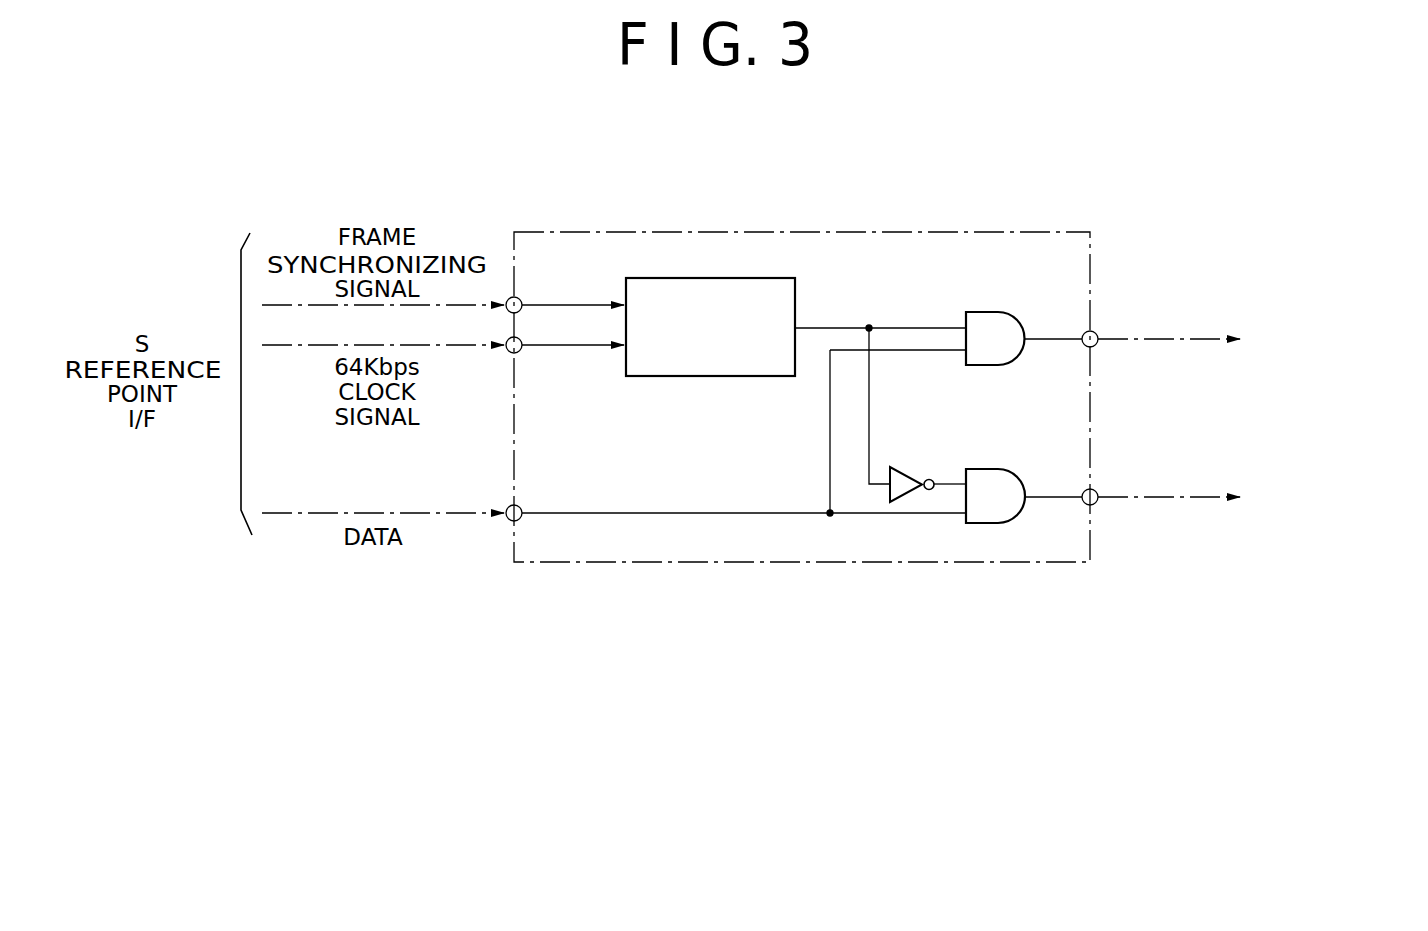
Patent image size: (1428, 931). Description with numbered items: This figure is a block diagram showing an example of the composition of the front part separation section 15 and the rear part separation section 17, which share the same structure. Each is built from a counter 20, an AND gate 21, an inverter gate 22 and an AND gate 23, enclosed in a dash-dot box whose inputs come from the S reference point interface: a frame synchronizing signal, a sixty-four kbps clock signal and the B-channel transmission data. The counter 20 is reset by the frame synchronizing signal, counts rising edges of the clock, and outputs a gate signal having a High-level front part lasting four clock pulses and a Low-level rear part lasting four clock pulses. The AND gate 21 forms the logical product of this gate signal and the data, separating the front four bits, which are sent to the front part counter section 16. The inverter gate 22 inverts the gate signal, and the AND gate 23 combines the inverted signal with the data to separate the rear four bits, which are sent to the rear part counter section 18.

The front part separation section 15 is at (807, 232).
The rear part separation section 17 is at (802, 366).
The front part counter section 16 is at (1190, 339).
The rear part counter section 18 is at (1190, 497).
The counter 20 is at (797, 290).
The AND gate 21 is at (983, 312).
The inverter gate 22 is at (908, 467).
The AND gate 23 is at (985, 469).